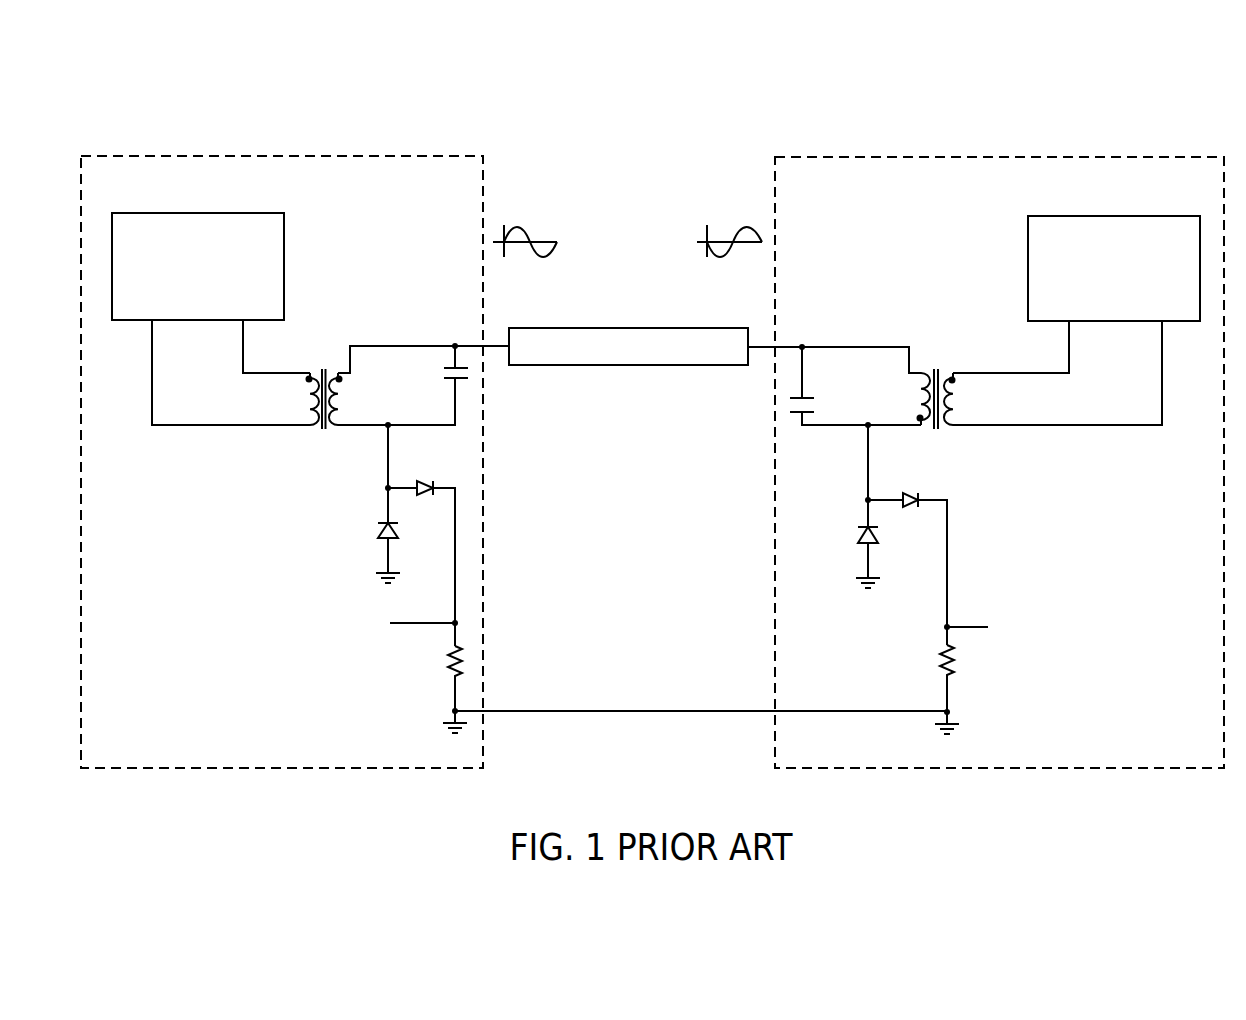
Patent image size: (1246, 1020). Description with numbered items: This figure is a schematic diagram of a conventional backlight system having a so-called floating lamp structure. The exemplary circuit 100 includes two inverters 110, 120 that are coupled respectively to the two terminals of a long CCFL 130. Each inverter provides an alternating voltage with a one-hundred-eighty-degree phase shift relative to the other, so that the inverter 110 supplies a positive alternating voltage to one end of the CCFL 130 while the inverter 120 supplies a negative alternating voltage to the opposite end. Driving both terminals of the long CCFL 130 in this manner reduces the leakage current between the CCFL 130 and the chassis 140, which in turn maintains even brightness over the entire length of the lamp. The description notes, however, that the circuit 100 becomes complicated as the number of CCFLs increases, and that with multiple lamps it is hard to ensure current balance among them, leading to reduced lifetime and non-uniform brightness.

The circuit 100 is at (166, 114).
The inverter 110 is at (407, 159).
The inverter 120 is at (1153, 159).
The long CCFL 130 is at (608, 330).
The chassis 140 is at (506, 713).